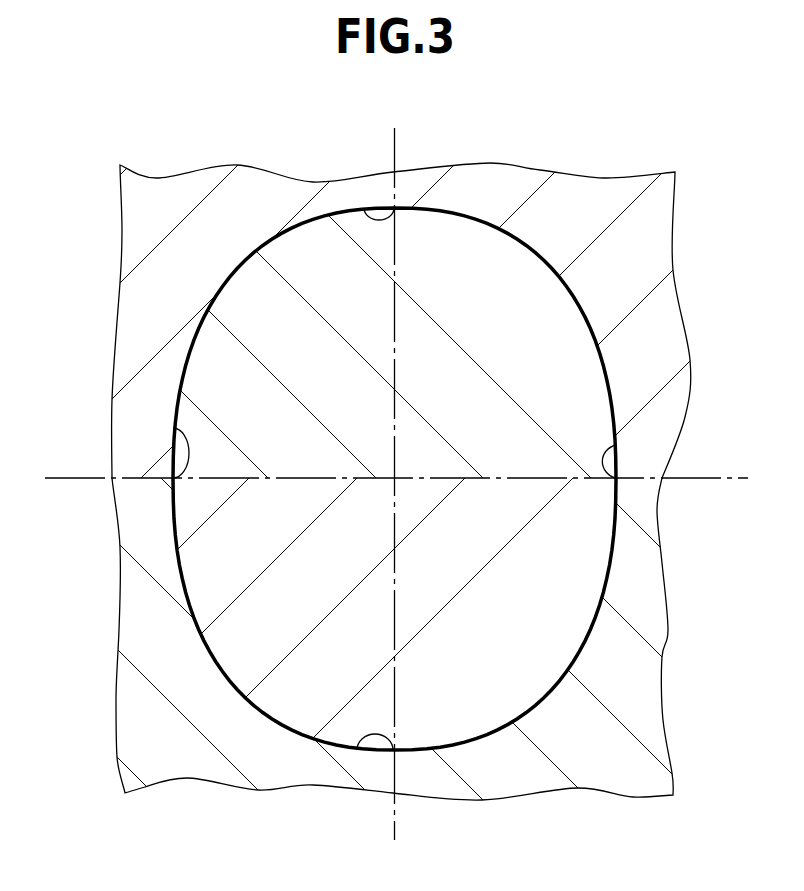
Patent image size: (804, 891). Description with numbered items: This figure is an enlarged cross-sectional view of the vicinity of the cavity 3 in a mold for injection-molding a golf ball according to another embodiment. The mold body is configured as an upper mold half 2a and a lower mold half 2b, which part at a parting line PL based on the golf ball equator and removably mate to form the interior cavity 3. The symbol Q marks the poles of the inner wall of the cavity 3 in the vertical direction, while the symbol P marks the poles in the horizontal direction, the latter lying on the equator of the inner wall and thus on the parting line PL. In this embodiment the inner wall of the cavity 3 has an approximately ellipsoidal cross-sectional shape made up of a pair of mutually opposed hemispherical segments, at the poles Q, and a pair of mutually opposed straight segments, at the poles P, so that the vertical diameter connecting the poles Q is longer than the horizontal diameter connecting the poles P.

The upper mold half 2a is at (608, 207).
The lower mold half 2b is at (610, 742).
The cavity 3 is at (592, 552).
The poles in a horizontal direction P is at (173, 427).
The poles in a vertical direction Q is at (363, 207).
The parting line PL is at (92, 478).